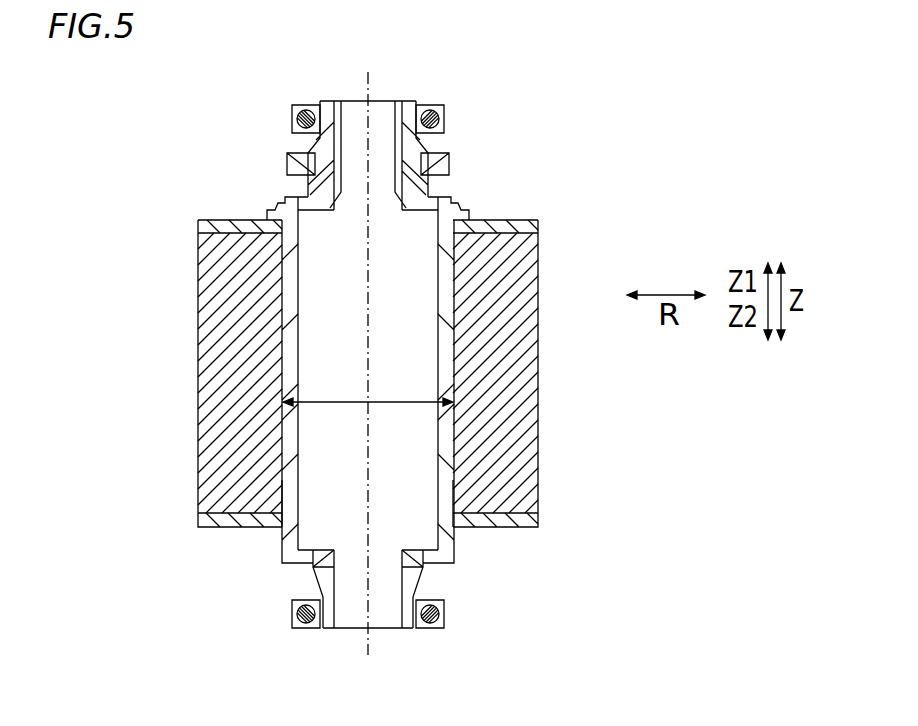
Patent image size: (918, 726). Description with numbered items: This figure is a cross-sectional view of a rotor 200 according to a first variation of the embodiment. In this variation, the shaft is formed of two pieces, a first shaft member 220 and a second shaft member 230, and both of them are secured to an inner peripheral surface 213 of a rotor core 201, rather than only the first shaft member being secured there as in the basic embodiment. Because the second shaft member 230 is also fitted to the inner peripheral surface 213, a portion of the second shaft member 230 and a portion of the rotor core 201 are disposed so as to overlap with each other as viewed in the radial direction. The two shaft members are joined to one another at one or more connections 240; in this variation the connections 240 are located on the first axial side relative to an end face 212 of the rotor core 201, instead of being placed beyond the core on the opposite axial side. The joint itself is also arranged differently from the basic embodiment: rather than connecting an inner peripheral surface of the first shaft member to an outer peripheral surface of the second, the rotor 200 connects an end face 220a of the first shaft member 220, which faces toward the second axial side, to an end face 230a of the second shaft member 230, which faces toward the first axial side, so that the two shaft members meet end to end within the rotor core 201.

The rotor 200 is at (213, 96).
The rotor core 201 is at (199, 357).
The end face 212 is at (198, 530).
The inner peripheral surface 213 is at (284, 499).
The first shaft member 220 is at (299, 278).
The end face 220a is at (290, 405).
The second shaft member 230 is at (299, 527).
The end face 230a is at (290, 399).
The connection 240 is at (285, 398).